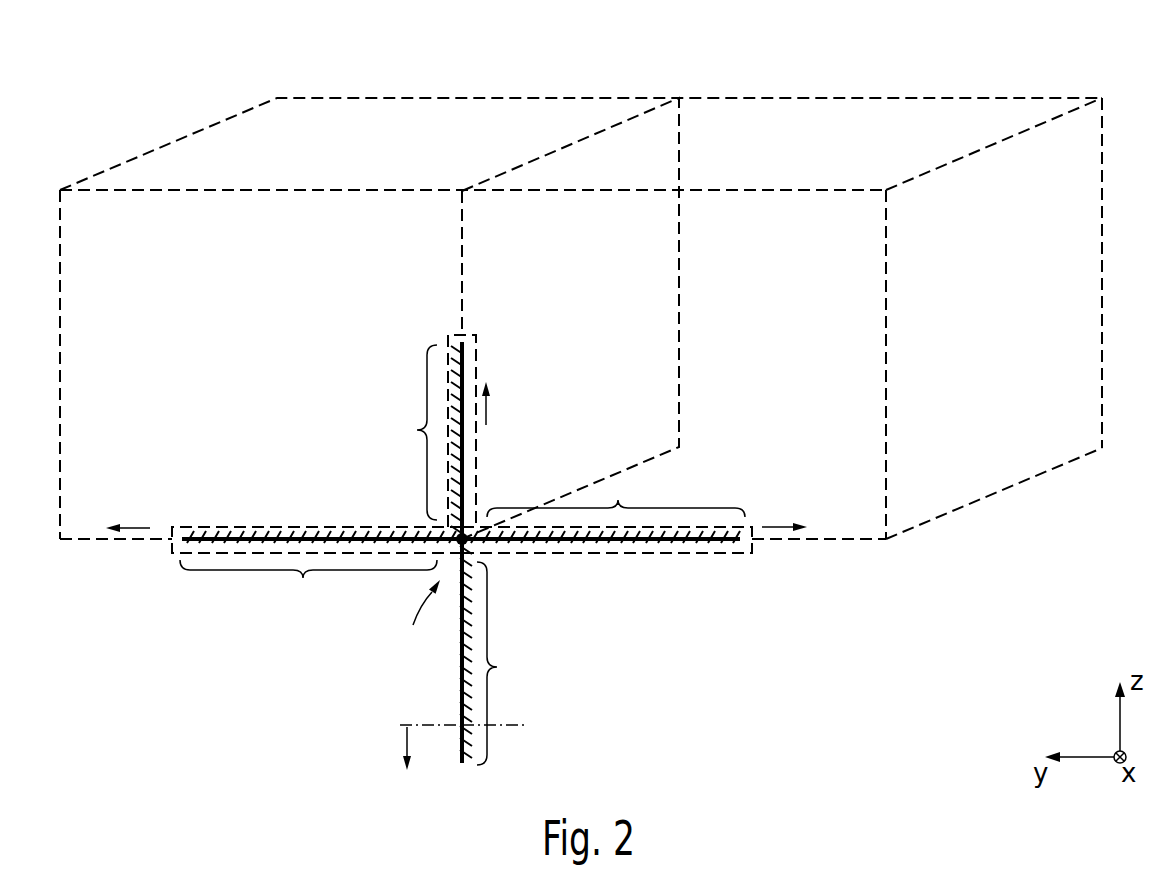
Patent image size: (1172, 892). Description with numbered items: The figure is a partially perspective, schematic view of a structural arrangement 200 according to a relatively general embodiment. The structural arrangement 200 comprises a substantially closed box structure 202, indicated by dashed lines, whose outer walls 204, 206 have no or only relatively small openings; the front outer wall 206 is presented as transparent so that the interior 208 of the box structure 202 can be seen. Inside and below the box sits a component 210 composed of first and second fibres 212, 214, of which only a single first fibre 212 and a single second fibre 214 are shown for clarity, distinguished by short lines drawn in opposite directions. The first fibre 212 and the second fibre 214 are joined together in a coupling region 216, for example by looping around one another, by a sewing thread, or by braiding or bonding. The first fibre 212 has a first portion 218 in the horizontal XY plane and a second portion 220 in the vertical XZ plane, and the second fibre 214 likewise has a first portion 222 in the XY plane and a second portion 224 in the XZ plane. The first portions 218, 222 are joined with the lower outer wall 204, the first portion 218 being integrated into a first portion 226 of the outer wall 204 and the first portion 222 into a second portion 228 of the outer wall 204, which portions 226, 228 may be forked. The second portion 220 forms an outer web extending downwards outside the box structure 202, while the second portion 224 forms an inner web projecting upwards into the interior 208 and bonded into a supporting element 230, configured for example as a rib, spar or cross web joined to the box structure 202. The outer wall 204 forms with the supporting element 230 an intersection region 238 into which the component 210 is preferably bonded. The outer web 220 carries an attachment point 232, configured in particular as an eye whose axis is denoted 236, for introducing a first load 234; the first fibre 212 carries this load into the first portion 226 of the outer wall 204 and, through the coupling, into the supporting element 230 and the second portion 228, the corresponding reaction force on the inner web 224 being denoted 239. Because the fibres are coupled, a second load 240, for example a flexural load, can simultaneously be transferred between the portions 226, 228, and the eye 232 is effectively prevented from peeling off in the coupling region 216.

The structural arrangement 200 is at (106, 92).
The box structure 202 is at (791, 96).
The outer wall 204 is at (588, 118).
The front outer wall 206 is at (835, 505).
The interior 208 is at (753, 338).
The component 210 is at (313, 671).
The first fibre 212 is at (227, 545).
The second fibre 214 is at (465, 362).
The coupling region 216 is at (468, 546).
The first portion of the first fibre 218 is at (308, 591).
The second portion of the first fibre 220 is at (511, 663).
The first portion of the second fibre 222 is at (616, 491).
The second portion of the second fibre 224 is at (422, 431).
The first portion of the outer wall 226 is at (222, 527).
The second portion of the outer wall 228 is at (637, 556).
The supporting element 230 is at (657, 137).
The attachment point 232 is at (455, 712).
The first load 234 is at (405, 730).
The axis of the eye 236 is at (520, 728).
The intersection region 238 is at (416, 622).
The reaction force 239 is at (487, 410).
The second load 240 is at (138, 527).